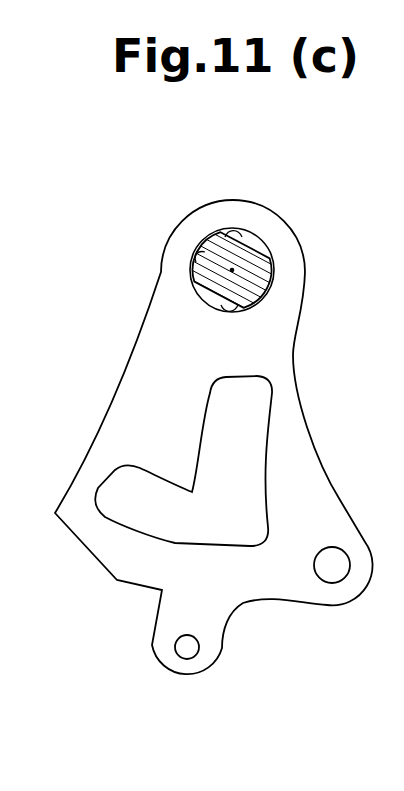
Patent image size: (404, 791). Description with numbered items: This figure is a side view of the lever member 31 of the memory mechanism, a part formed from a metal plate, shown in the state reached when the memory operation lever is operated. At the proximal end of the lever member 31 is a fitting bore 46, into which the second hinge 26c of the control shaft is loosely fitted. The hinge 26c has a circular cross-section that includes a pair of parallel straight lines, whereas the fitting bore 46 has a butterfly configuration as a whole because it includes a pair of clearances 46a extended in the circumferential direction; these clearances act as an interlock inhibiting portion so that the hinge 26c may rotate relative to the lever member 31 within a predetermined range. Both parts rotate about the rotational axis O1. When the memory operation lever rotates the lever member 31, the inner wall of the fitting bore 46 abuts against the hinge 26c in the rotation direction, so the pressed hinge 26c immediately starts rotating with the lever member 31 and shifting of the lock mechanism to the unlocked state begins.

The lever member 31 is at (313, 447).
The fitting bore 46 is at (190, 268).
The clearances 46a is at (228, 232).
The second hinge 26c is at (278, 270).
The rotational axis O1 is at (232, 270).